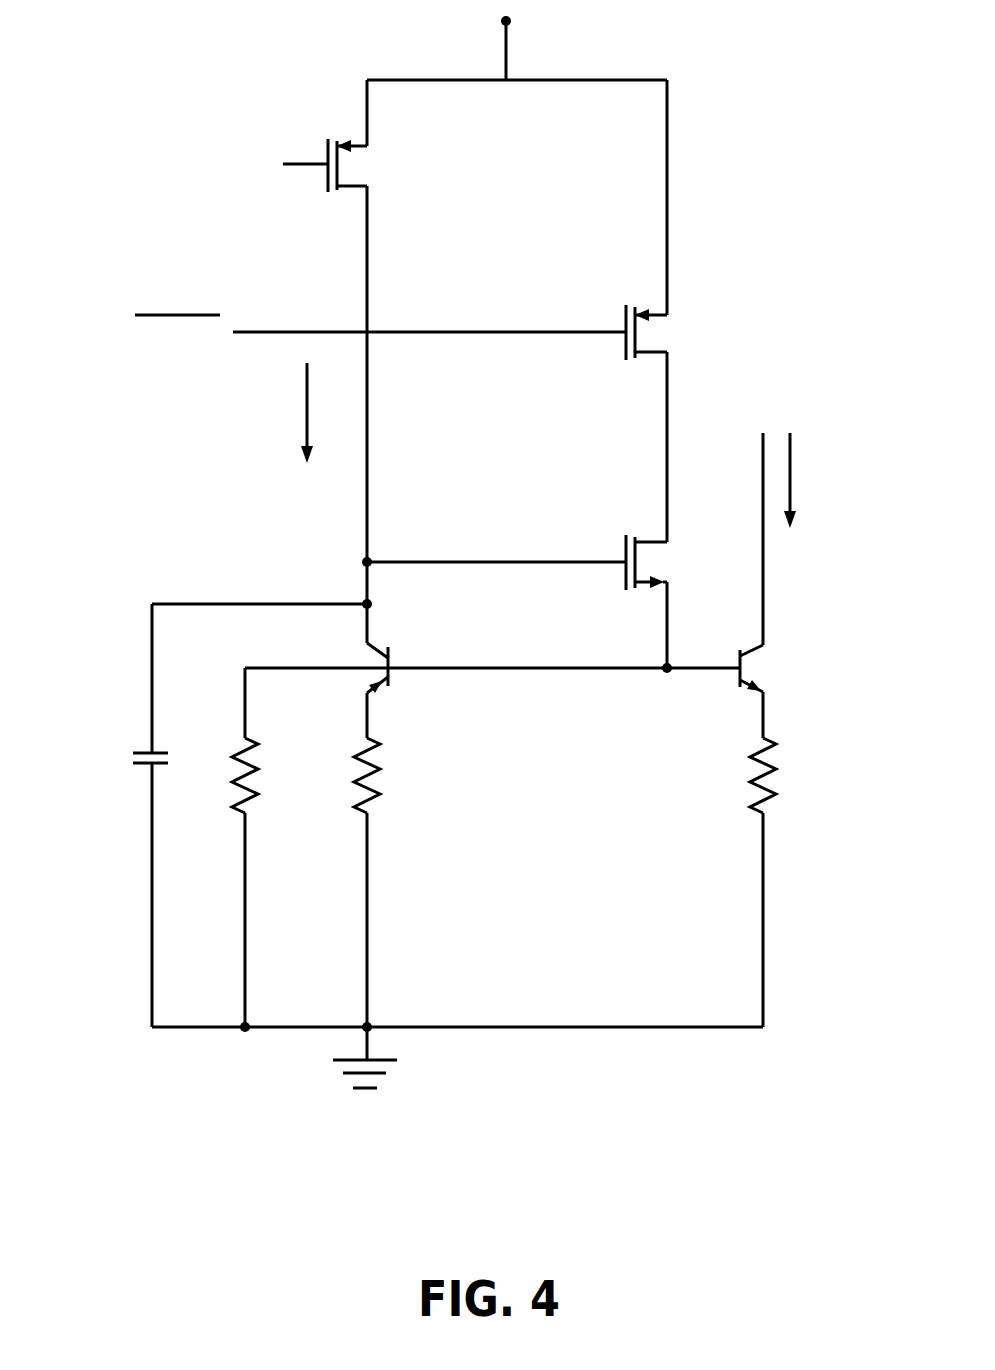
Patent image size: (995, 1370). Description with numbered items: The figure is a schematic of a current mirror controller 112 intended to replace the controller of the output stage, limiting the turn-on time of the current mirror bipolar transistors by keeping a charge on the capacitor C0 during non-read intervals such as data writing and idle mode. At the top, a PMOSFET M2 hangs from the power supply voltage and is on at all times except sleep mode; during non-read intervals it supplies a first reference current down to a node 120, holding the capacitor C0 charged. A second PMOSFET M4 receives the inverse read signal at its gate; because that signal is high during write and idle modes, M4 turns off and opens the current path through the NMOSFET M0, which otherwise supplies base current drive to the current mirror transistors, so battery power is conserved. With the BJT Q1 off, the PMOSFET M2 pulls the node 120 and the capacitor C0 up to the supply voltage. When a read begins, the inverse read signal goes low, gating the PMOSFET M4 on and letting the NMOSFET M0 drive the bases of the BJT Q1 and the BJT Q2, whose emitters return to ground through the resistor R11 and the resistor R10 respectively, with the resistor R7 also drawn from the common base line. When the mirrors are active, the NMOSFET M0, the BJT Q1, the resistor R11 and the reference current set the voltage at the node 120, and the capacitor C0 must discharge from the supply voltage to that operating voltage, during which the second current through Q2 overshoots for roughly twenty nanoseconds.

The current mirror controller 112 is at (147, 202).
The node 120 is at (362, 562).
The PMOSFET M2 is at (327, 154).
The PMOSFET M4 is at (649, 337).
The NMOSFET M0 is at (648, 566).
The BJT Q1 is at (374, 671).
The BJT Q2 is at (783, 668).
The resistor R7 is at (272, 775).
The resistor R11 is at (400, 775).
The resistor R10 is at (726, 775).
The capacitor C0 is at (126, 815).